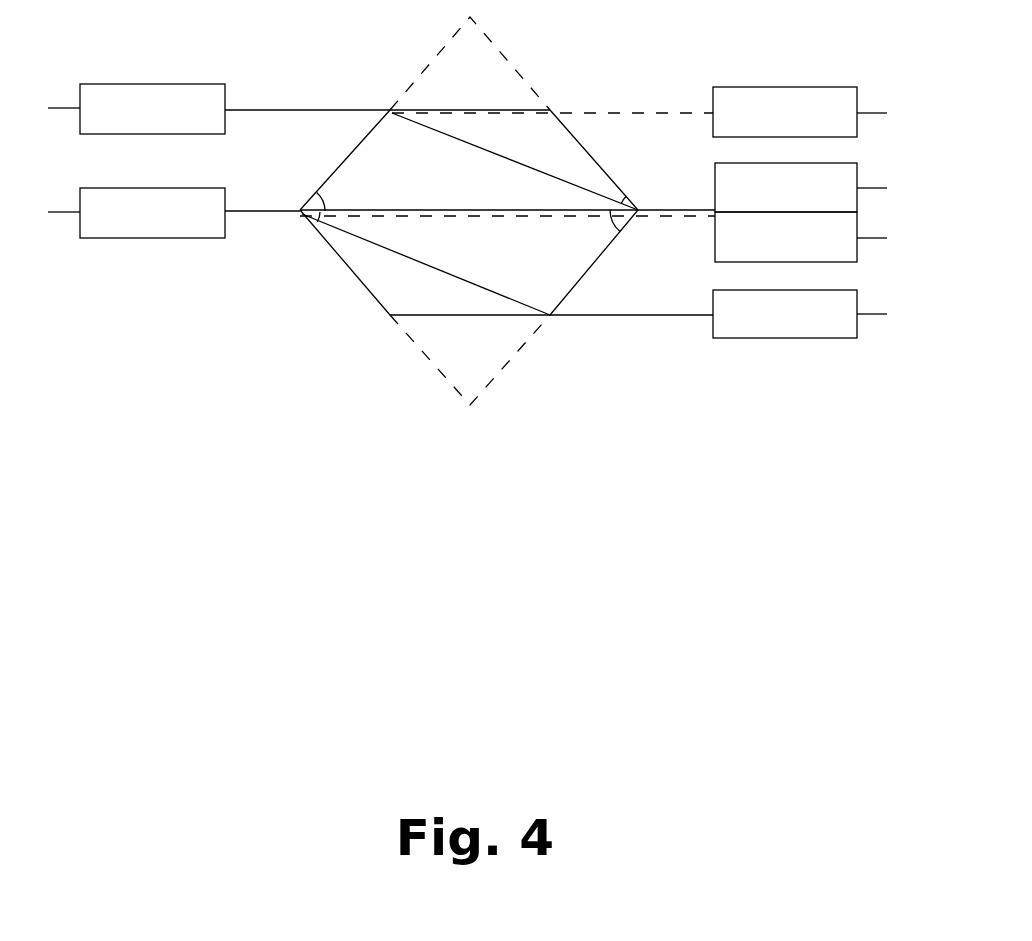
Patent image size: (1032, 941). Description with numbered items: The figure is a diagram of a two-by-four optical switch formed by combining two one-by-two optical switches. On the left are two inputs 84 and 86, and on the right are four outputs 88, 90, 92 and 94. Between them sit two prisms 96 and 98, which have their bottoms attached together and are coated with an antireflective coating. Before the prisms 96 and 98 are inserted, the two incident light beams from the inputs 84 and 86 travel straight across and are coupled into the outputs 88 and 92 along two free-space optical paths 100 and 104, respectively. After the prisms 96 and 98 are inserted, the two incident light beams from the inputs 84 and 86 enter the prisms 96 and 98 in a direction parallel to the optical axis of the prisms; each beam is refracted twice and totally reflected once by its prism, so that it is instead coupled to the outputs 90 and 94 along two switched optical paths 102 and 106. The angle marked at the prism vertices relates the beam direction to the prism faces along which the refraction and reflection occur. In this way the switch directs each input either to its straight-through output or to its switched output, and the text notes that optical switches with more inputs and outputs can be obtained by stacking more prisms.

The input 84 is at (152, 90).
The input 86 is at (150, 238).
The output 88 is at (790, 98).
The output 90 is at (850, 163).
The output 92 is at (800, 263).
The output 94 is at (792, 332).
The prism 96 is at (357, 150).
The prism 98 is at (353, 252).
The free-space optical path 100 is at (625, 115).
The switched optical path 102 is at (663, 205).
The free-space optical path 104 is at (663, 218).
The switched optical path 106 is at (635, 315).